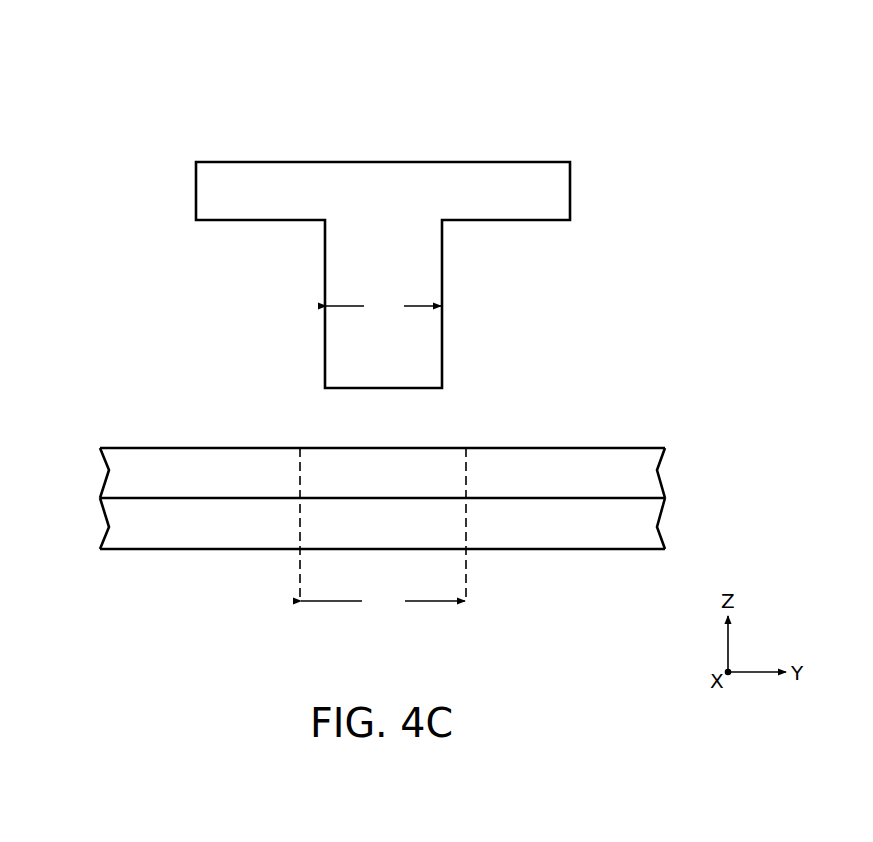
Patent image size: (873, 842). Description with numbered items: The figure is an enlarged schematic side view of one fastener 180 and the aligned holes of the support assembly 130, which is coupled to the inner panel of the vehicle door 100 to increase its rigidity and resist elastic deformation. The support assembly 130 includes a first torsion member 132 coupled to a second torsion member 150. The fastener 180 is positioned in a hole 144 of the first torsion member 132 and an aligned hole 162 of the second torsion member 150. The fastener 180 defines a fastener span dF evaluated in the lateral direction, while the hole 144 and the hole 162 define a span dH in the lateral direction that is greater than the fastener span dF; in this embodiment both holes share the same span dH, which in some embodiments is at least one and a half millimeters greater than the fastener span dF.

The vehicle door 100 is at (349, 350).
The support assembly 130 is at (349, 388).
The first torsion member 132 is at (383, 420).
The hole 144 is at (357, 395).
The second torsion member 150 is at (382, 582).
The hole 162 is at (355, 546).
The fastener 180 is at (383, 217).